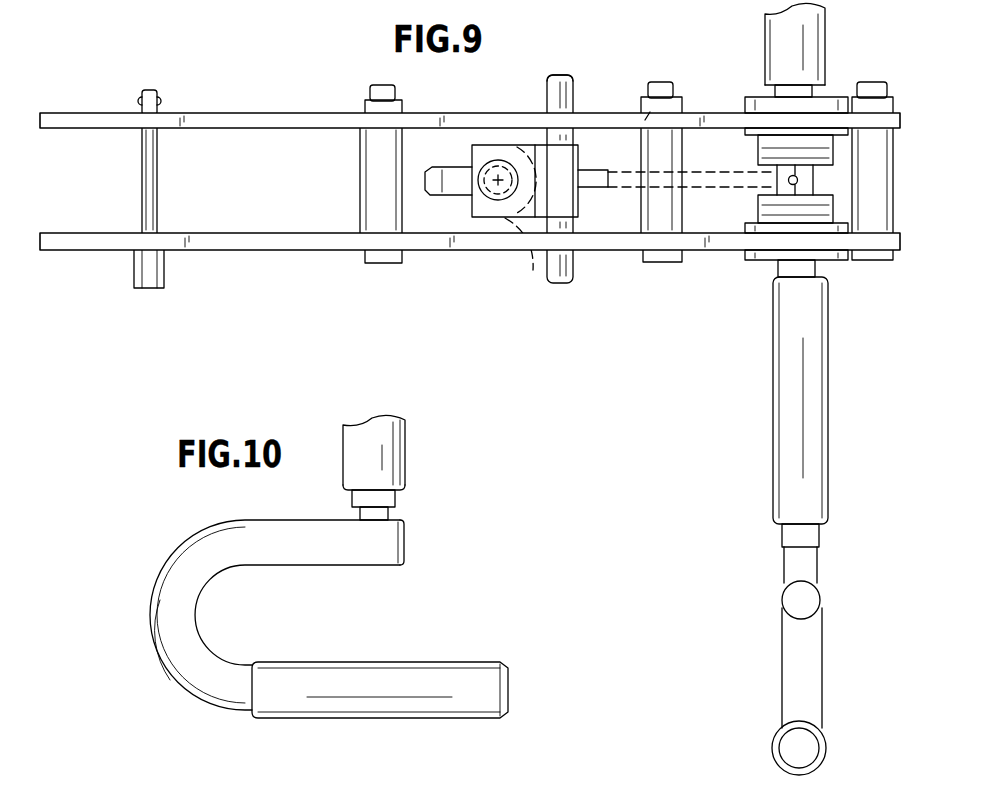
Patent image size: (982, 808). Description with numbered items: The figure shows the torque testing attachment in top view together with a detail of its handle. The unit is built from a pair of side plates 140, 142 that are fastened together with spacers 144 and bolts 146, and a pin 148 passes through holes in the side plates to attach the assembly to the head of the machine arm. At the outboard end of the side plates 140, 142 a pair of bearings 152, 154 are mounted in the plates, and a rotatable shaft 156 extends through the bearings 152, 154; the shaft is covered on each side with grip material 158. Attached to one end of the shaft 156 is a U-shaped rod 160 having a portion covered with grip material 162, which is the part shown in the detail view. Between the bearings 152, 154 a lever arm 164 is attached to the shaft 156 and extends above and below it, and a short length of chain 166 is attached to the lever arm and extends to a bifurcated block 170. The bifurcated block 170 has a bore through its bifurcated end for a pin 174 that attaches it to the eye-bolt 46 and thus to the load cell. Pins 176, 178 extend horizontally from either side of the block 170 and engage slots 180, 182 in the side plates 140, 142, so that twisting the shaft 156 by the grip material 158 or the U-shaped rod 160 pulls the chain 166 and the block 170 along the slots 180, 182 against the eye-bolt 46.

In FIG. 9, the eye-bolt 46 is at (445, 193).
In FIG. 9, the side plate 140 is at (275, 113).
In FIG. 9, the side plate 142 is at (226, 251).
In FIG. 9, the spacer 144 is at (404, 152).
In FIG. 9, the bolt 146 is at (659, 263).
In FIG. 9, the pin 148 is at (158, 97).
In FIG. 9, the bearing 152 is at (758, 145).
In FIG. 9, the bearing 154 is at (758, 212).
In FIG. 9, the rotatable shaft 156 is at (822, 97).
In FIG. 9, the grip material 158 is at (825, 34).
In FIG. 10, the grip material 158 is at (407, 452).
In FIG. 9, the U-shaped rod 160 is at (822, 645).
In FIG. 10, the U-shaped rod 160 is at (353, 567).
In FIG. 9, the grip material 162 is at (826, 740).
In FIG. 10, the grip material 162 is at (366, 661).
In FIG. 9, the lever arm 164 is at (800, 180).
In FIG. 9, the chain 166 is at (710, 171).
In FIG. 9, the bifurcated block 170 is at (535, 150).
In FIG. 9, the pin 174 is at (495, 219).
In FIG. 9, the pin 176 is at (551, 74).
In FIG. 9, the pin 178 is at (573, 271).
In FIG. 9, the slot 180 is at (648, 118).
In FIG. 9, the slot 182 is at (524, 272).